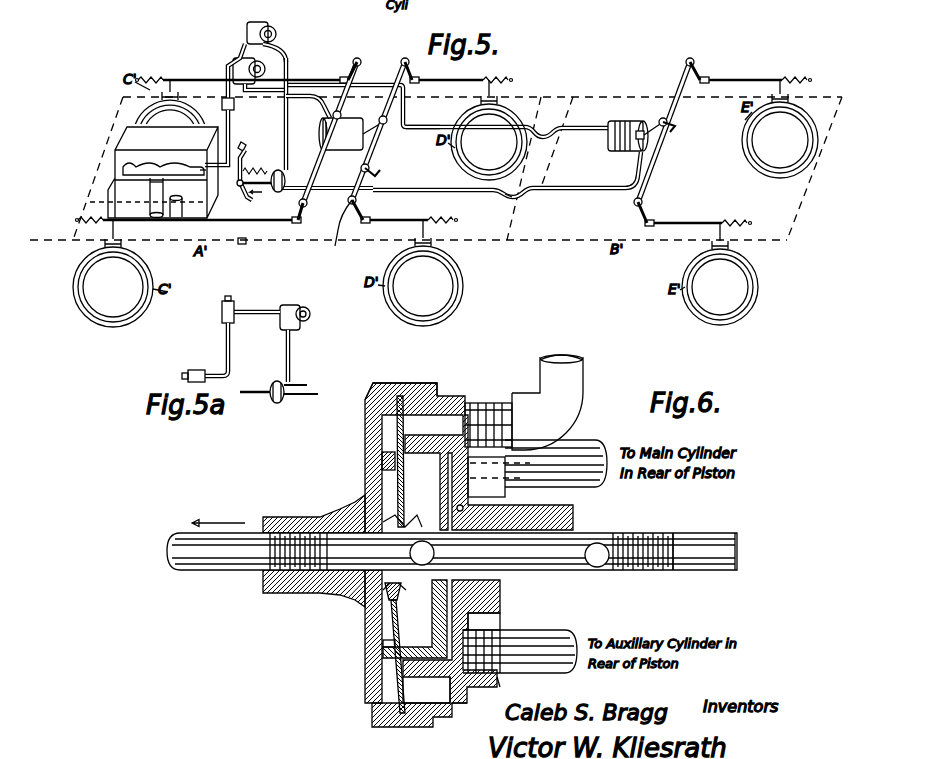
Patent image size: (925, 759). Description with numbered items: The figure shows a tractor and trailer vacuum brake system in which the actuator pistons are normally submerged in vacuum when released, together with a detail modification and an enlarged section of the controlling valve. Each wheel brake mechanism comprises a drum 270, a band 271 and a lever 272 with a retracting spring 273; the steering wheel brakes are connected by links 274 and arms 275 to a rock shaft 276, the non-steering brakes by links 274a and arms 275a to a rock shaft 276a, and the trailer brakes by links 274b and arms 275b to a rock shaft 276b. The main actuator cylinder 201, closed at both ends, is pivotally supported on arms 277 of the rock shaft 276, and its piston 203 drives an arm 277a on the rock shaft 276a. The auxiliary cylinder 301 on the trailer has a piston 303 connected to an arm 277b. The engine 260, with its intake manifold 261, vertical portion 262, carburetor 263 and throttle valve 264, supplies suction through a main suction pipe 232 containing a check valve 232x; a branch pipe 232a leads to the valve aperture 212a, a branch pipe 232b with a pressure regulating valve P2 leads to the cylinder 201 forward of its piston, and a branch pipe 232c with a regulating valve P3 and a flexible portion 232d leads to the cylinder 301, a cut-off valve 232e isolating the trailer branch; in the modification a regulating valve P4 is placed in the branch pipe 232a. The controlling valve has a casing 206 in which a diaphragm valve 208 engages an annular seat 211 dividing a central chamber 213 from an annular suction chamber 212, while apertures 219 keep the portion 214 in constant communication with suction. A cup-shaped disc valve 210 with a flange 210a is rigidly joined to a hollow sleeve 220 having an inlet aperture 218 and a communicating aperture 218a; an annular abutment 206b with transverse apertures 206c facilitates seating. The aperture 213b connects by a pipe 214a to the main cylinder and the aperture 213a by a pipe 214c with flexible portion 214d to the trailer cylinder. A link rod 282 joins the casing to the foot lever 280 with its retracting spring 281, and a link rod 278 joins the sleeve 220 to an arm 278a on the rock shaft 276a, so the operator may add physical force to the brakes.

In FIG. 5, the pressure regulating valve P2 is at (232, 66).
In FIG. 5, the pressure regulating valve P3 is at (261, 24).
In FIG. 5A, the pressure regulating valve P4 is at (295, 310).
In FIG. 5, the cylinder of the main actuator 201 is at (323, 136).
In FIG. 5, the piston 203 is at (342, 121).
In FIG. 5, the casing 206 is at (279, 193).
In FIG. 5A, the casing 206 is at (276, 403).
In FIG. 6, the casing 206 is at (403, 382).
In FIG. 6, the annular abutment 206b is at (382, 650).
In FIG. 6, the transverse apertures 206c is at (385, 672).
In FIG. 6, the diaphragm valve 208 is at (393, 620).
In FIG. 6, the cup-shaped disc valve 210 is at (505, 684).
In FIG. 6, the annular flange or seat 210a is at (410, 715).
In FIG. 6, the annular seat 211 is at (460, 700).
In FIG. 6, the annular suction chamber 212 is at (440, 715).
In FIG. 6, the aperture 212a is at (480, 402).
In FIG. 6, the central chamber 213 is at (500, 490).
In FIG. 6, the aperture 213a is at (505, 617).
In FIG. 6, the aperture 213b is at (560, 440).
In FIG. 6, the portion of the casing 214 is at (388, 603).
In FIG. 5, the pipe 214a is at (330, 190).
In FIG. 5A, the pipe 214a is at (298, 384).
In FIG. 6, the pipe 214a is at (598, 487).
In FIG. 5, the pipe 214c is at (445, 190).
In FIG. 6, the pipe 214c is at (577, 630).
In FIG. 5, the flexible portion 214d is at (515, 196).
In FIG. 6, the inlet aperture 218 is at (605, 553).
In FIG. 6, the communicating aperture 218a is at (412, 544).
In FIG. 6, the apertures 219 is at (397, 430).
In FIG. 6, the hollow sleeve 220 is at (592, 536).
In FIG. 5, the main suction pipe 232 is at (226, 106).
In FIG. 5, the branch pipe 232a is at (284, 120).
In FIG. 5A, the branch pipe 232a is at (258, 316).
In FIG. 6, the branch pipe 232a is at (584, 372).
In FIG. 5, the branch pipe 232b is at (270, 88).
In FIG. 5, the branch pipe 232c is at (345, 70).
In FIG. 5, the flexible portion 232d is at (548, 125).
In FIG. 5, the cut-off valve 232e is at (240, 44).
In FIG. 5, the check valve 232x is at (242, 244).
In FIG. 5A, the check valve 232x is at (197, 363).
In FIG. 5, the internal combustion engine 260 is at (116, 135).
In FIG. 5, the intake manifold 261 is at (122, 170).
In FIG. 5, the vertical portion 262 is at (120, 182).
In FIG. 5, the carburetor 263 is at (176, 218).
In FIG. 5, the throttle valve 264 is at (134, 201).
In FIG. 5, the drum 270 is at (445, 213).
In FIG. 5, the band 271 is at (122, 320).
In FIG. 5, the lever 272 is at (176, 92).
In FIG. 5, the retracting spring 273 is at (447, 148).
In FIG. 5, the links 274 is at (347, 76).
In FIG. 5, the links 274a is at (435, 78).
In FIG. 5, the links 274b is at (758, 78).
In FIG. 5, the arms 275 is at (360, 66).
In FIG. 5, the arms 275a is at (404, 104).
In FIG. 5, the arms 275b is at (694, 66).
In FIG. 5, the rock shaft 276 is at (328, 146).
In FIG. 5, the rock shaft 276a is at (368, 158).
In FIG. 5, the rock shaft 276b is at (660, 162).
In FIG. 5, the arms 277 is at (330, 116).
In FIG. 5, the arm 277a is at (398, 126).
In FIG. 5, the arm 277b is at (675, 130).
In FIG. 5, the link rod 278 is at (335, 246).
In FIG. 5A, the link rod 278 is at (318, 395).
In FIG. 6, the link rod 278 is at (705, 540).
In FIG. 5, the arm 278a is at (378, 176).
In FIG. 5, the foot lever 280 is at (243, 196).
In FIG. 5, the retracting spring 281 is at (258, 162).
In FIG. 5, the link rod 282 is at (252, 157).
In FIG. 5A, the link rod 282 is at (262, 389).
In FIG. 6, the link rod 282 is at (214, 572).
In FIG. 5, the cylinder of the auxiliary power actuator 301 is at (618, 120).
In FIG. 5, the piston 303 is at (640, 122).